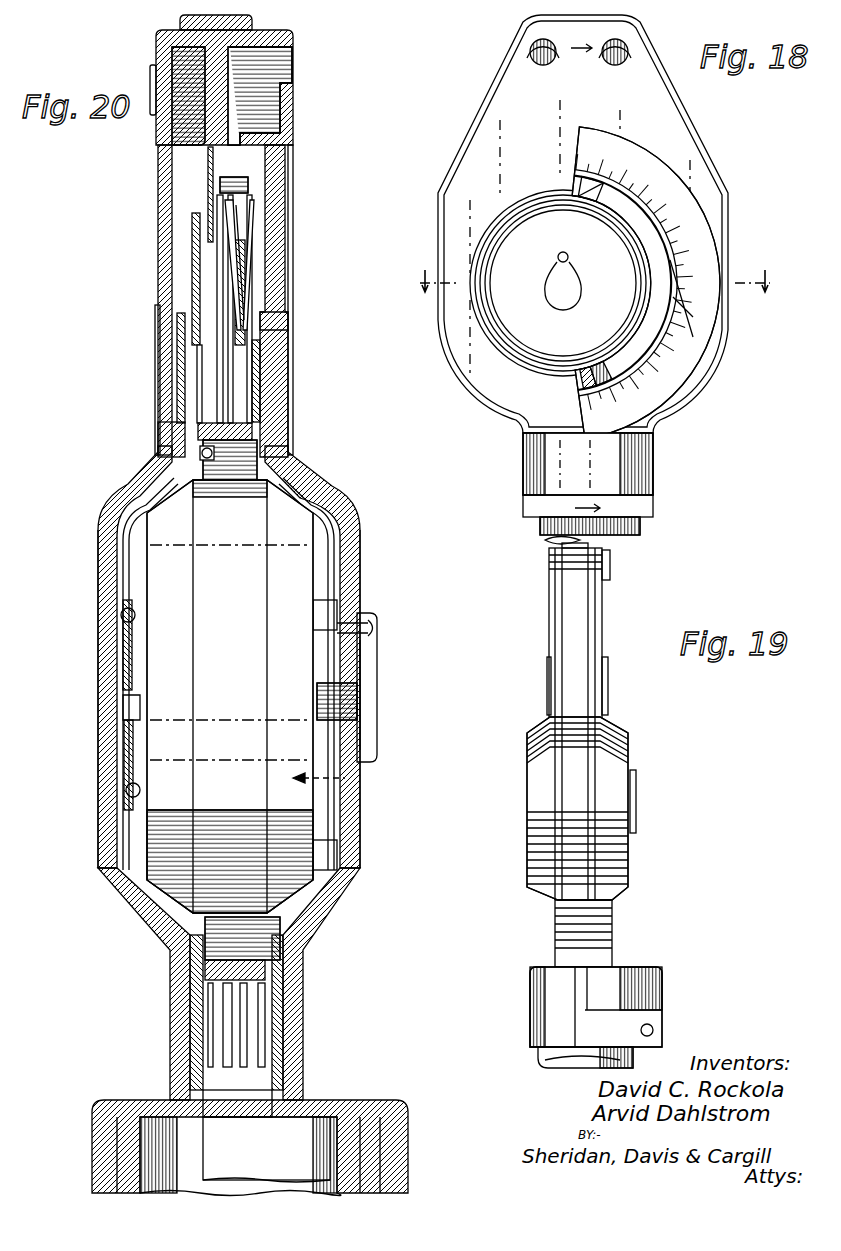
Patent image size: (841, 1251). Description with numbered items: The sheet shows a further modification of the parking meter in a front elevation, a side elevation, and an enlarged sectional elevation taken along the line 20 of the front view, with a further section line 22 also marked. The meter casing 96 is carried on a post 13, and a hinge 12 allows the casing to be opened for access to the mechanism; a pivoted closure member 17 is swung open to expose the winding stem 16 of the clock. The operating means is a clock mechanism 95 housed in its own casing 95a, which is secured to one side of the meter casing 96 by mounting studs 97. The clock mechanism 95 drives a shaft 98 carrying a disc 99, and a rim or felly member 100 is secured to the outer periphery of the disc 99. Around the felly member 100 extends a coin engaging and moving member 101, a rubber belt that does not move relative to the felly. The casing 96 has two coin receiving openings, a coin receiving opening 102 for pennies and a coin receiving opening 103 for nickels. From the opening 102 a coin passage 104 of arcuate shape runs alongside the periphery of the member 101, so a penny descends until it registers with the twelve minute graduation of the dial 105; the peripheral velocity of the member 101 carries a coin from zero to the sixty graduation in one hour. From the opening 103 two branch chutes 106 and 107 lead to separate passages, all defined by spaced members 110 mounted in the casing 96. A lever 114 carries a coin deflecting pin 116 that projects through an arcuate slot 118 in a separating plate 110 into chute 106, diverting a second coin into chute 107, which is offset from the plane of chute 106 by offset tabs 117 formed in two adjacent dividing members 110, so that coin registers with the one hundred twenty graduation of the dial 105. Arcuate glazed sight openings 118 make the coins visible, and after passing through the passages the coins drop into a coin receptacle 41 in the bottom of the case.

In FIG. 19, the hinge 12 is at (652, 1024).
In FIG. 20, the post 13 is at (348, 1128).
In FIG. 19, the post 13 is at (548, 1060).
In FIG. 20, the winding stem 16 is at (345, 692).
In FIG. 20, the closure member 17 is at (375, 662).
In FIG. 18, the closure member 17 is at (577, 280).
In FIG. 19, the closure member 17 is at (637, 800).
In FIG. 18, the section line 20 is at (578, 271).
In FIG. 18, the section line 22 is at (596, 281).
In FIG. 20, the coin receptacle 41 is at (298, 1130).
In FIG. 20, the clock mechanism 95 is at (348, 777).
In FIG. 20, the casing 95a is at (300, 800).
In FIG. 20, the meter casing 96 is at (352, 552).
In FIG. 18, the meter casing 96 is at (700, 178).
In FIG. 19, the meter casing 96 is at (615, 742).
In FIG. 20, the mounting studs 97 is at (330, 603).
In FIG. 20, the shaft 98 is at (125, 712).
In FIG. 20, the disc 99 is at (122, 582).
In FIG. 20, the felly member 100 is at (258, 452).
In FIG. 20, the coin engaging and moving member 101 is at (250, 430).
In FIG. 18, the coin receiving opening 102 is at (530, 52).
In FIG. 20, the coin receiving opening 103 is at (265, 78).
In FIG. 18, the coin receiving opening 103 is at (622, 46).
In FIG. 20, the coin passage 104 is at (158, 330).
In FIG. 18, the dial 105 is at (705, 372).
In FIG. 19, the dial 105 is at (607, 668).
In FIG. 20, the branch chute 106 is at (283, 340).
In FIG. 20, the branch chute 107 is at (240, 380).
In FIG. 20, the spaced members 110 is at (248, 212).
In FIG. 20, the lever 114 is at (252, 243).
In FIG. 20, the coin deflecting pin 116 is at (248, 185).
In FIG. 20, the offset tabs 117 is at (242, 278).
In FIG. 20, the arcuate slot 118 is at (250, 165).